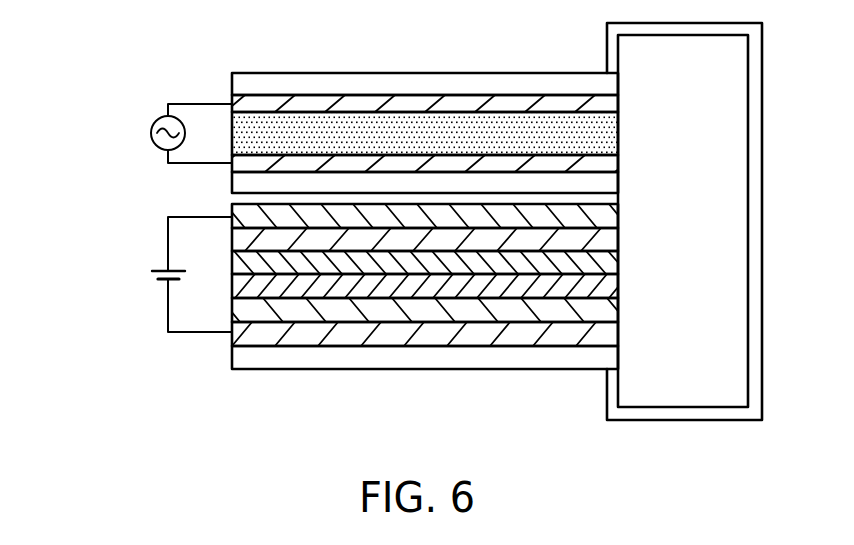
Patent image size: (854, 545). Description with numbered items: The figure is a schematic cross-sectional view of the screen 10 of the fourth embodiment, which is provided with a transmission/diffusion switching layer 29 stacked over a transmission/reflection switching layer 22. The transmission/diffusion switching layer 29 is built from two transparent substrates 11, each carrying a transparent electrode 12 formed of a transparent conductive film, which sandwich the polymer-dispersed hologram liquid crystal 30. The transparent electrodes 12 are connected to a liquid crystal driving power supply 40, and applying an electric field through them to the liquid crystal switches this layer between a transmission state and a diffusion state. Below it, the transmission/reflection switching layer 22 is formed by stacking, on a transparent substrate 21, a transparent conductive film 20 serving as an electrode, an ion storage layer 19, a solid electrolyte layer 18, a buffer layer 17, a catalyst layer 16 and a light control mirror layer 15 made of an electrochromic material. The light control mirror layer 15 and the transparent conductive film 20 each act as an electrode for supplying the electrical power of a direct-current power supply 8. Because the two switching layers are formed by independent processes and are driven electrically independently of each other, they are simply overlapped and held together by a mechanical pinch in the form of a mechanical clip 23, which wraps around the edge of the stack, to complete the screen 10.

The screen 10 is at (63, 73).
The transmission/diffusion switching layer 29 is at (121, 73).
The transmission/reflection switching layer 22 is at (121, 205).
The liquid crystal driving power supply 40 is at (161, 117).
The direct-current power supply 8 is at (160, 268).
The transparent substrate 11 is at (612, 85).
The transparent electrode 12 is at (612, 110).
The polymer-dispersed hologram liquid crystal 30 is at (612, 139).
The light control mirror layer 15 is at (612, 220).
The catalyst layer 16 is at (612, 244).
The buffer layer 17 is at (612, 267).
The solid electrolyte layer 18 is at (612, 290).
The ion storage layer 19 is at (612, 313).
The transparent conductive film 20 is at (612, 338).
The transparent substrate 21 is at (612, 361).
The mechanical clip 23 is at (754, 167).